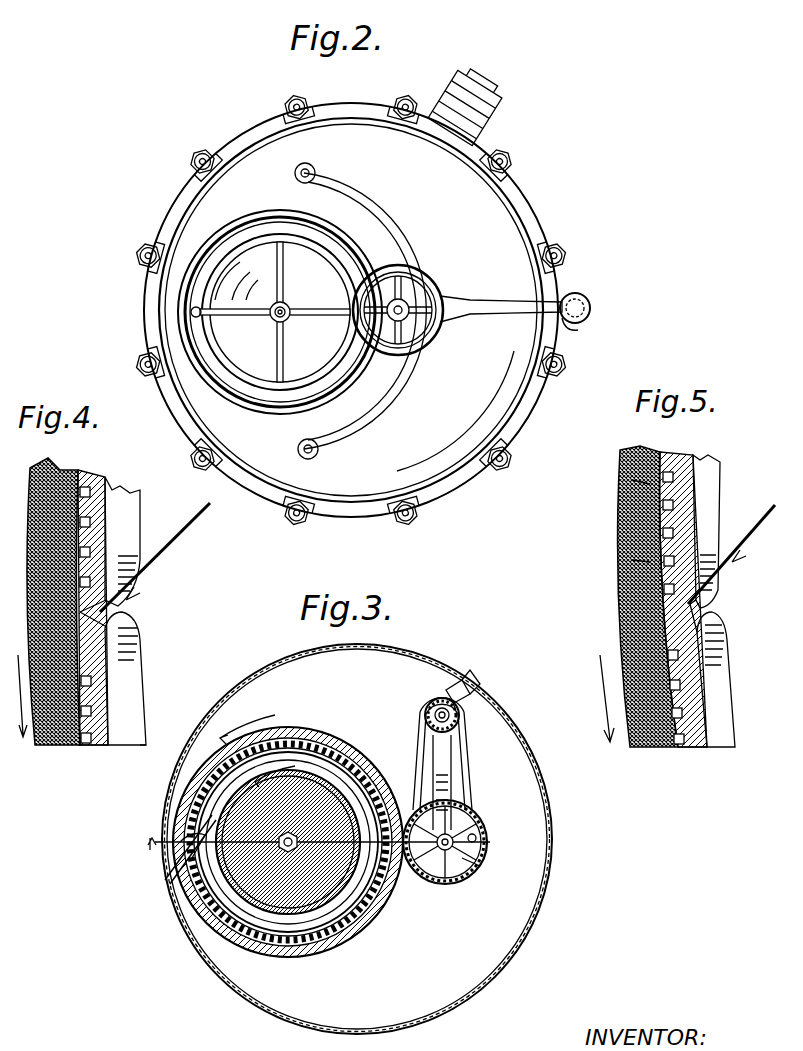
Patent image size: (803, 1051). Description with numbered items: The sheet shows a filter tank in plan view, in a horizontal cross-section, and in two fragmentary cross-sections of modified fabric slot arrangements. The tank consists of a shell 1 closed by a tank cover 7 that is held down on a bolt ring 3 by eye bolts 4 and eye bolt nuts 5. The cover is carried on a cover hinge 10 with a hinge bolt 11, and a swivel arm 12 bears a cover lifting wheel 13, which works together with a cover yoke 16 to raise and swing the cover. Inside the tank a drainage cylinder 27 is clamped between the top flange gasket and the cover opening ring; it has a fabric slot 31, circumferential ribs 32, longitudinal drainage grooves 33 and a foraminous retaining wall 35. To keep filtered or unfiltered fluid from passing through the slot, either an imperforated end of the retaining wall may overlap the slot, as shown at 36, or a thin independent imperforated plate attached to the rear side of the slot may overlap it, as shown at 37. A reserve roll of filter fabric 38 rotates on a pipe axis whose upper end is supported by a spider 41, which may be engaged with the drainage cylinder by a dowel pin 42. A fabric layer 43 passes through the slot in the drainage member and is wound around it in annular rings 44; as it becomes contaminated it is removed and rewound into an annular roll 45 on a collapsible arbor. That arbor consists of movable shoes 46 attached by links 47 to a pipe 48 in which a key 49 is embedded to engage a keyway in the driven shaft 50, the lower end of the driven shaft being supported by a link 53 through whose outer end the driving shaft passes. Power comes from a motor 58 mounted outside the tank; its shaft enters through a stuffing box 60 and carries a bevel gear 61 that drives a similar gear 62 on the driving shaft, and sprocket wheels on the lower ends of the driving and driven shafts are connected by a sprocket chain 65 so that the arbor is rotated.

In FIG. 3, the shell 1 is at (474, 660).
In FIG. 2, the bolt ring 3 is at (530, 203).
In FIG. 2, the eye bolts 4 is at (572, 250).
In FIG. 2, the eye bolt nuts 5 is at (124, 262).
In FIG. 2, the tank cover 7 is at (248, 158).
In FIG. 2, the cover hinge 10 is at (580, 330).
In FIG. 2, the hinge bolt 11 is at (590, 303).
In FIG. 2, the swivel arm 12 is at (496, 318).
In FIG. 2, the cover lifting wheel 13 is at (425, 277).
In FIG. 2, the cover yoke 16 is at (370, 215).
In FIG. 3, the drainage cylinder 27 is at (285, 925).
In FIG. 4, the drainage cylinder 27 is at (98, 548).
In FIG. 5, the drainage cylinder 27 is at (695, 748).
In FIG. 3, the fabric slot 31 is at (175, 860).
In FIG. 4, the fabric slot 31 is at (108, 614).
In FIG. 5, the fabric slot 31 is at (690, 610).
In FIG. 3, the circumferential ribs 32 is at (220, 995).
In FIG. 4, the circumferential ribs 32 is at (130, 745).
In FIG. 5, the circumferential ribs 32 is at (738, 790).
In FIG. 4, the longitudinal drainage grooves 33 is at (110, 488).
In FIG. 5, the longitudinal drainage grooves 33 is at (655, 548).
In FIG. 4, the foraminous retaining wall 35 is at (90, 745).
In FIG. 5, the foraminous retaining wall 35 is at (680, 748).
In FIG. 4, the imperforated end of retaining wall 36 is at (128, 655).
In FIG. 5, the imperforated plate 37 is at (712, 612).
In FIG. 3, the reserve roll of filter fabric 38 is at (320, 920).
In FIG. 2, the spider 41 is at (322, 318).
In FIG. 2, the dowel pin 42 is at (208, 322).
In FIG. 3, the fabric layer 43 is at (185, 890).
In FIG. 4, the fabric layer 43 is at (168, 556).
In FIG. 5, the fabric layer 43 is at (731, 547).
In FIG. 3, the annular rings 44 is at (370, 920).
In FIG. 4, the annular rings 44 is at (58, 745).
In FIG. 5, the annular rings 44 is at (660, 622).
In FIG. 3, the annular roll 45 is at (480, 866).
In FIG. 3, the movable shoes 46 is at (476, 846).
In FIG. 3, the links 47 is at (445, 878).
In FIG. 3, the pipe 48 is at (457, 832).
In FIG. 3, the key 49 is at (428, 860).
In FIG. 3, the driven shaft 50 is at (452, 860).
In FIG. 3, the bottom link 53 is at (455, 742).
In FIG. 2, the motor 58 is at (490, 85).
In FIG. 3, the stuffing box 60 is at (472, 690).
In FIG. 3, the bevel gear 61 is at (428, 704).
In FIG. 3, the bevel gear 62 is at (428, 722).
In FIG. 3, the sprocket chain 65 is at (470, 768).